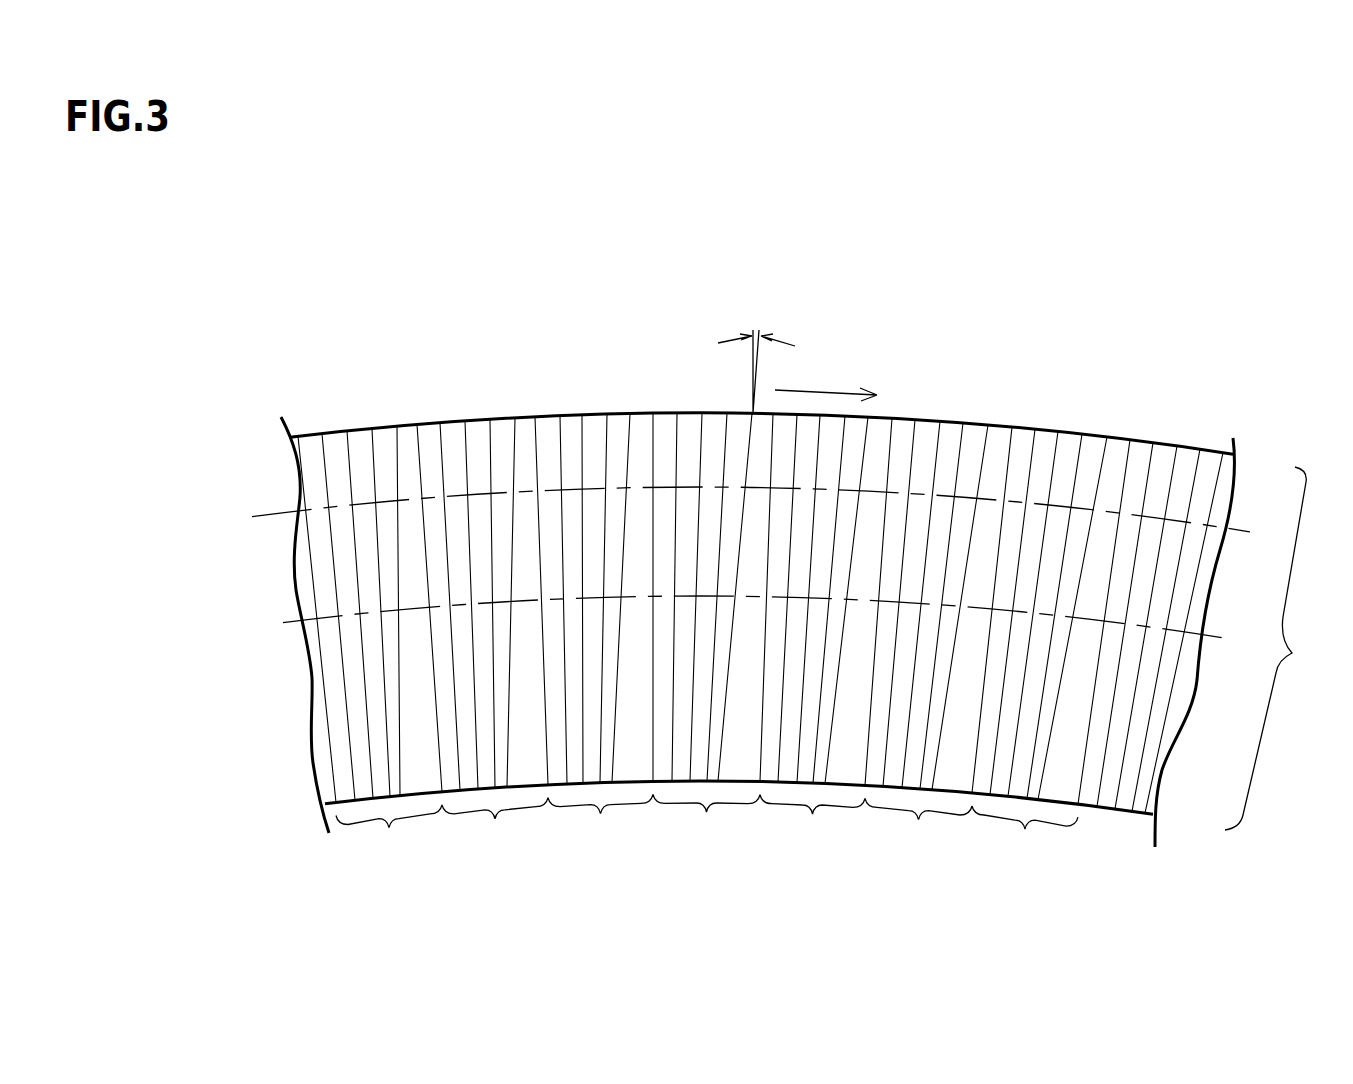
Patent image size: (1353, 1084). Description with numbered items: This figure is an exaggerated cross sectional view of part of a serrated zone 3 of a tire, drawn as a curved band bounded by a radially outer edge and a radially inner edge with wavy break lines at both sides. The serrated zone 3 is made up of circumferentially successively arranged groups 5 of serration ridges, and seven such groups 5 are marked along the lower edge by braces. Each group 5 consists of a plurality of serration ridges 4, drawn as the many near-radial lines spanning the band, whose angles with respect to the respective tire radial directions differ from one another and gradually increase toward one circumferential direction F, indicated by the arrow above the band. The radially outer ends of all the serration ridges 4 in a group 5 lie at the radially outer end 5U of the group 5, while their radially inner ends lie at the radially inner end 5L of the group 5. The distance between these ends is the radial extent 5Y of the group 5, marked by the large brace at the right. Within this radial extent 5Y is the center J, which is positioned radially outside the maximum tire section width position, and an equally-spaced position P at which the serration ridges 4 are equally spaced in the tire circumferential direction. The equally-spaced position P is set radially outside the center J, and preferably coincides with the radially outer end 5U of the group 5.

The serrated zone 3 is at (1103, 406).
The serration ridges 4 is at (632, 437).
The groups of serration ridges 5 is at (707, 830).
The radially outer end of the group 5U is at (1165, 438).
The radially inner end of the group 5L is at (1100, 811).
The radial extent 5Y is at (1285, 648).
The equally-spaced position P is at (1235, 537).
The center of the radial extent J is at (1210, 647).
The circumferential direction F is at (813, 390).